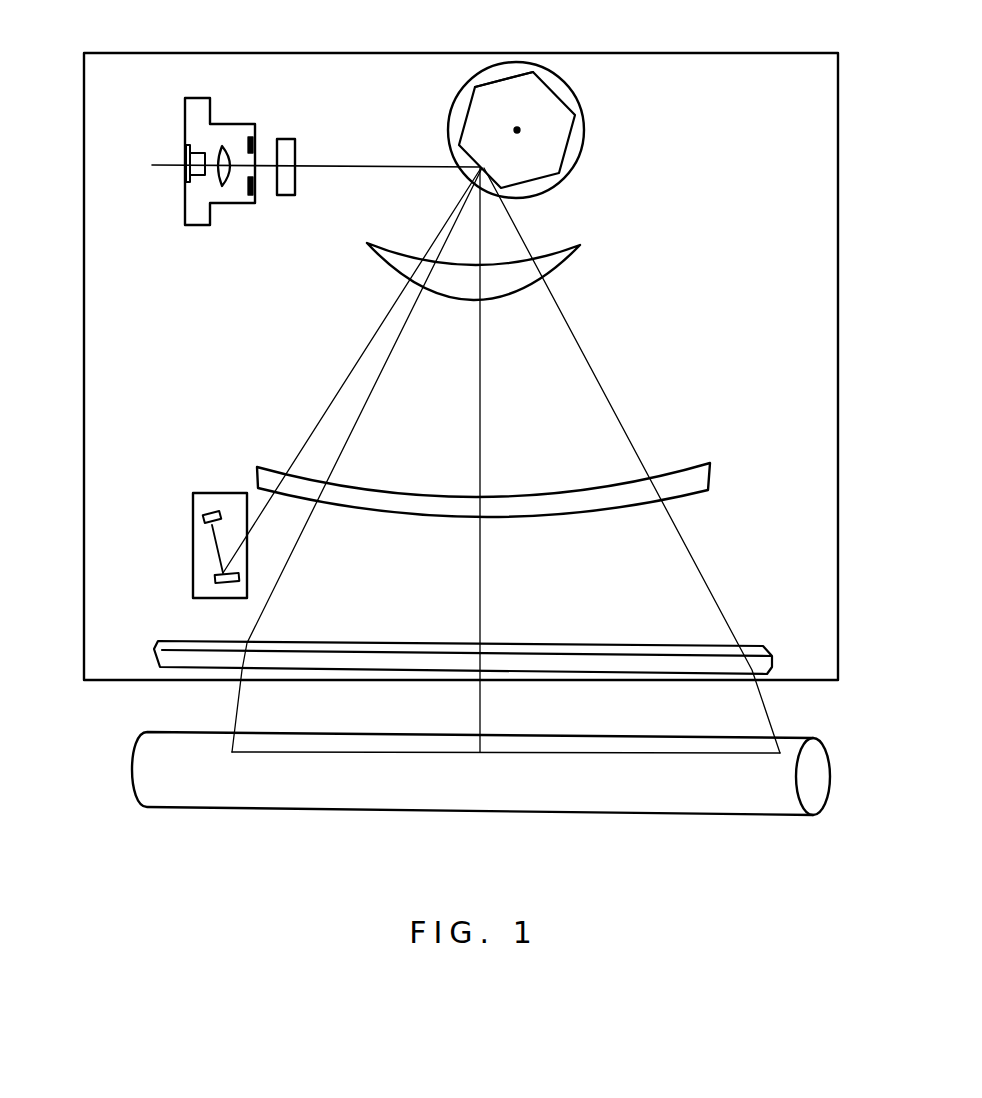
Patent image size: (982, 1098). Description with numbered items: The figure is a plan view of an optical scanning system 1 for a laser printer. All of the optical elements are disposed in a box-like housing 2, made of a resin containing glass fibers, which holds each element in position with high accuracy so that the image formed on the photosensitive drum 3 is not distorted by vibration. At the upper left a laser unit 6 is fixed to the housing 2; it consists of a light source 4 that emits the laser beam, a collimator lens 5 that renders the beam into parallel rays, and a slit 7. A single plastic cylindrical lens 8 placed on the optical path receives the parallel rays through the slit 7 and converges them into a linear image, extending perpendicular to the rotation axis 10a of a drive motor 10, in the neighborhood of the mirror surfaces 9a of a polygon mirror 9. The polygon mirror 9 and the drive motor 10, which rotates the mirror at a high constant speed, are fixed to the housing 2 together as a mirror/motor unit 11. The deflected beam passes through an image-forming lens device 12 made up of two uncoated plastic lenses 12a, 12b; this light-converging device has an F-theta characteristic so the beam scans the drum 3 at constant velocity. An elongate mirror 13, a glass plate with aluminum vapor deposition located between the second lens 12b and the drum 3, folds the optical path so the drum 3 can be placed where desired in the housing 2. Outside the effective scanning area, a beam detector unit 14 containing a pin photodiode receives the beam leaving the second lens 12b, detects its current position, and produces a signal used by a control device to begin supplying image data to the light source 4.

The optical scanning system 1 is at (93, 690).
The housing 2 is at (822, 418).
The photosensitive drum 3 is at (782, 803).
The light source 4 is at (188, 172).
The collimator lens 5 is at (225, 145).
The laser unit 6 is at (176, 219).
The slit 7 is at (257, 140).
The cylindrical lens 8 is at (287, 143).
The polygon mirror 9 is at (545, 103).
The mirror surfaces 9a is at (502, 80).
The drive motor 10 is at (577, 150).
The rotation axis 10a is at (512, 130).
The mirror/motor unit 11 is at (612, 115).
The image-forming lens device 12 is at (720, 263).
The first plastic lens 12a is at (576, 252).
The second plastic lens 12b is at (687, 478).
The elongate mirror 13 is at (757, 647).
The beam detector unit 14 is at (207, 500).